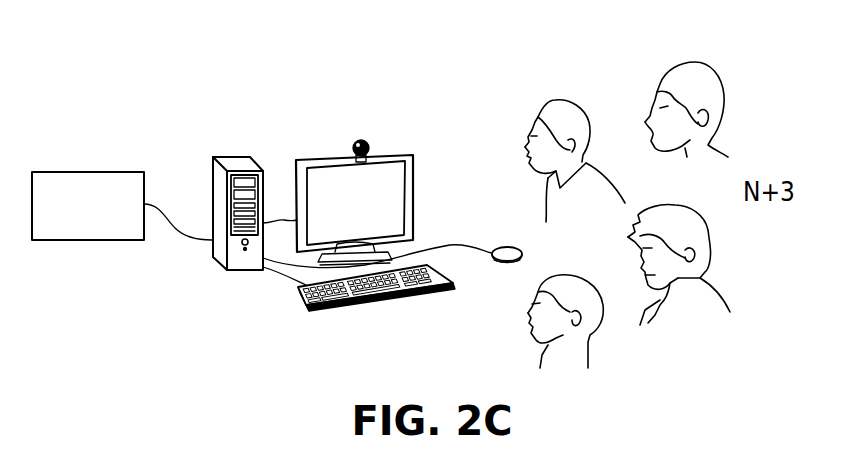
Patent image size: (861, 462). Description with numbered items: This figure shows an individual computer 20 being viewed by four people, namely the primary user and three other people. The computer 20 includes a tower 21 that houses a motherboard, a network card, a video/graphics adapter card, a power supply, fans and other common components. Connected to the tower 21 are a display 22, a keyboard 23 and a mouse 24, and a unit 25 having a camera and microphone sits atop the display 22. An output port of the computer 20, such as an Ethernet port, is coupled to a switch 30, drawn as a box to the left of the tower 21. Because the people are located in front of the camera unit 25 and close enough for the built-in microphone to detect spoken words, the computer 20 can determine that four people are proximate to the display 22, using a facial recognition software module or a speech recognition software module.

The computer 20 is at (180, 66).
The tower 21 is at (237, 157).
The display 22 is at (405, 158).
The keyboard 23 is at (387, 300).
The mouse 24 is at (510, 247).
The unit 25 is at (361, 140).
The switch 30 is at (93, 172).